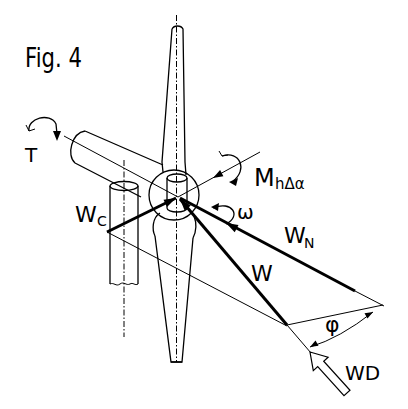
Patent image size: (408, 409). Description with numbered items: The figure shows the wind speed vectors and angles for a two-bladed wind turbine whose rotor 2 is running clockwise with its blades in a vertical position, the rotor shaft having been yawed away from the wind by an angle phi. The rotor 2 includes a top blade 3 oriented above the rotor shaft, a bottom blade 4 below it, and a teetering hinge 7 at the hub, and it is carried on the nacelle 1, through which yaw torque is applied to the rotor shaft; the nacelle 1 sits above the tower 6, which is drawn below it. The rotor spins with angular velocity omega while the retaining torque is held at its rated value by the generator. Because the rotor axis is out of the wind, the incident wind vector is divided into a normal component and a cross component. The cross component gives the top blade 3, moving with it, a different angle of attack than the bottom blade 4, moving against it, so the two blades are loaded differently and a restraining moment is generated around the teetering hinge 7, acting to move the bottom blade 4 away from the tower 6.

The nacelle 1 is at (78, 167).
The rotor 2 is at (166, 148).
The top blade 3 is at (167, 87).
The bottom blade 4 is at (172, 351).
The tower 6 is at (120, 243).
The teetering hinge 7 is at (163, 222).